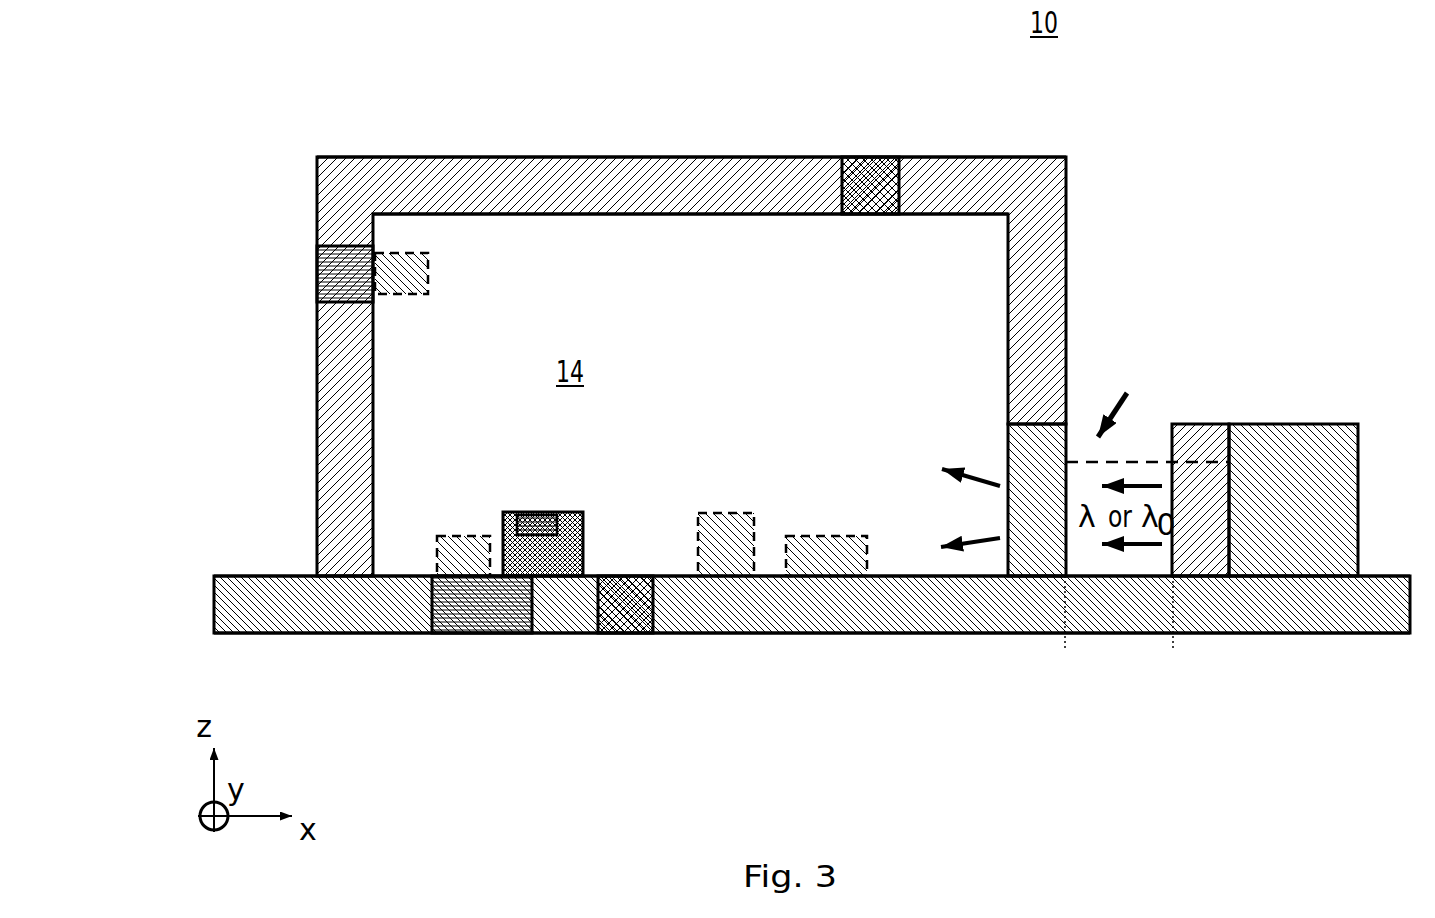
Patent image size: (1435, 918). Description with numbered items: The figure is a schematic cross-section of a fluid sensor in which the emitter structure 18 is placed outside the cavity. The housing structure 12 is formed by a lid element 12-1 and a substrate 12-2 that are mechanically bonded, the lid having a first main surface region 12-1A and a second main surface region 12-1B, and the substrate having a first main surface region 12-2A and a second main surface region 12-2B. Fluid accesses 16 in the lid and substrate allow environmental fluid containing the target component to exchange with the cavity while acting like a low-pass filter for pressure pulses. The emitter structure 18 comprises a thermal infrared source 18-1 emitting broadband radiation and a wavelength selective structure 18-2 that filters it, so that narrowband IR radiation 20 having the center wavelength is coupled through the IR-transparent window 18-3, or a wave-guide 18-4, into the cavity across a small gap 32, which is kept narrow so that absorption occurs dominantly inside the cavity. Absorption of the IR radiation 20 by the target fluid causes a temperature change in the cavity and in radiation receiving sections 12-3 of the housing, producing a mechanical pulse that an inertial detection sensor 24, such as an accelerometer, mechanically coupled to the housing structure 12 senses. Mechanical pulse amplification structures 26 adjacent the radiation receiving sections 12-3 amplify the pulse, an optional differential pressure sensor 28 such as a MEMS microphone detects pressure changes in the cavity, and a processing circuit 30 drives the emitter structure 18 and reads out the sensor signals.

The housing structure 12 is at (740, 389).
The lid element 12-1 is at (593, 329).
The first main surface region of the lid 12-1A is at (701, 155).
The second main surface region of the lid 12-1B is at (710, 217).
The substrate 12-2 is at (765, 583).
The first main surface region of the substrate 12-2A is at (763, 574).
The second main surface region of the substrate 12-2B is at (842, 634).
The radiation receiving section 12-3 is at (316, 272).
The fluid access 16 is at (871, 155).
The IR emitter 18 is at (1212, 440).
The infrared source 18-1 is at (1289, 422).
The wavelength selective structure 18-2 is at (1201, 422).
The window 18-3 is at (1049, 449).
The wave-guide 18-4 is at (1147, 418).
The IR radiation 20 is at (957, 487).
The inertial detection sensor 24 is at (585, 549).
The mechanical pulse amplification structure 26 is at (413, 268).
The differential pressure sensor 28 is at (716, 511).
The processing circuit 30 is at (839, 551).
The gap 32 is at (1065, 652).